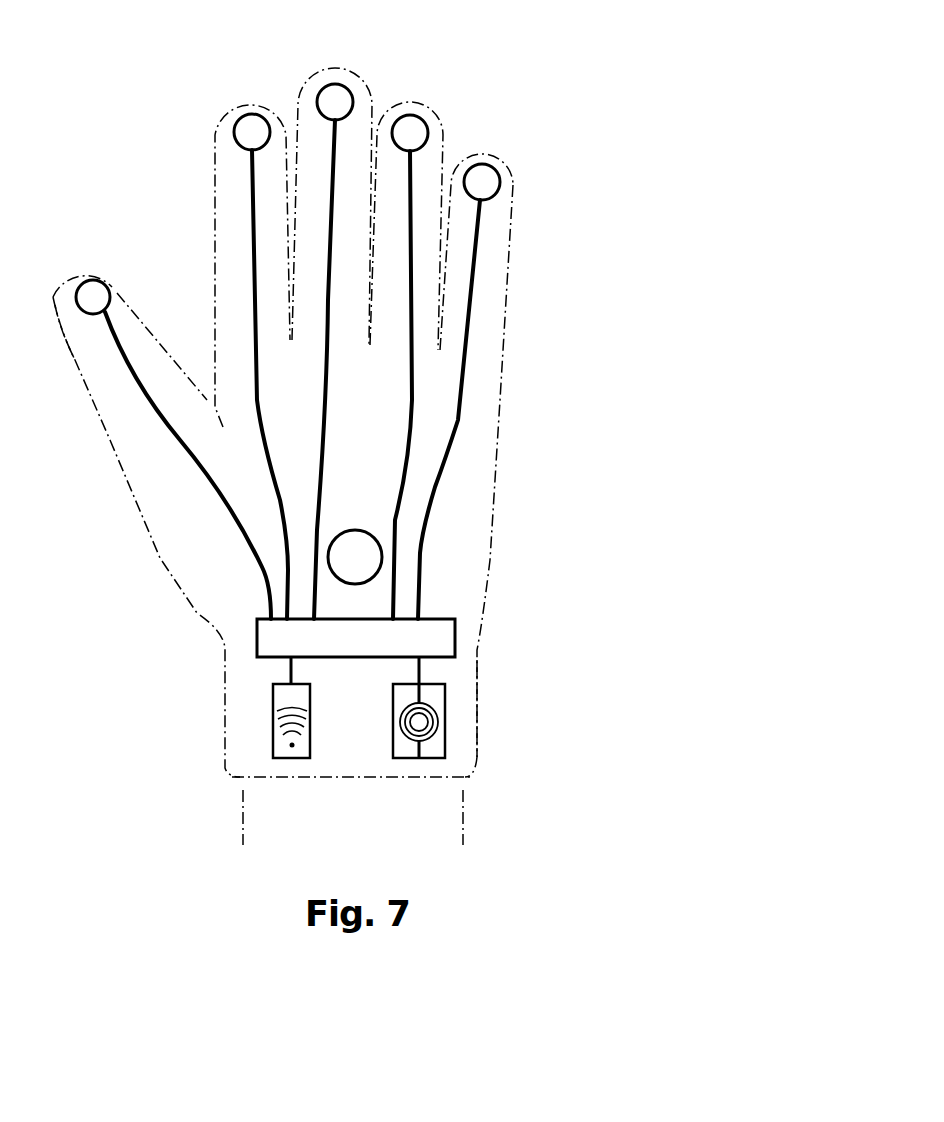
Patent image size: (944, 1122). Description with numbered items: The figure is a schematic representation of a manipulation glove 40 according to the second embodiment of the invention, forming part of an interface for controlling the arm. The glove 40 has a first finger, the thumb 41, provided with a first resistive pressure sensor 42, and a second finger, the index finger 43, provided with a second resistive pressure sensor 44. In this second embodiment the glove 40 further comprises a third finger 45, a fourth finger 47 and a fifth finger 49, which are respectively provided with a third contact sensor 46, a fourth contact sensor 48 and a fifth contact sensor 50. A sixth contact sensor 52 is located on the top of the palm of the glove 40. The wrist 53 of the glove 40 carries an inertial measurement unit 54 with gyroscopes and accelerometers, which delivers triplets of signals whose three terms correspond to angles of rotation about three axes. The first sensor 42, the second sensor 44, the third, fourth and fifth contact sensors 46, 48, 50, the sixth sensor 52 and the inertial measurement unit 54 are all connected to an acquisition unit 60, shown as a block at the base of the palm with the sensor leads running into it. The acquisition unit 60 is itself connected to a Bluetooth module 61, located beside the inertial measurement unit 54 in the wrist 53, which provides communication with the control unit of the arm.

The manipulation glove 40 is at (478, 445).
The thumb 41 is at (68, 283).
The first resistive pressure sensor 42 is at (95, 293).
The index finger 43 is at (252, 100).
The second resistive pressure sensor 44 is at (243, 130).
The third finger 45 is at (338, 70).
The third contact sensor 46 is at (340, 97).
The fourth finger 47 is at (418, 100).
The fourth contact sensor 48 is at (413, 130).
The fifth finger 49 is at (487, 148).
The fifth contact sensor 50 is at (485, 178).
The sixth contact sensor 52 is at (355, 545).
The wrist 53 is at (478, 726).
The inertial measurement unit 54 is at (413, 758).
The acquisition unit 60 is at (455, 636).
The Bluetooth module 61 is at (273, 710).